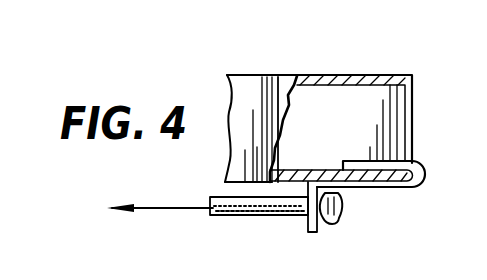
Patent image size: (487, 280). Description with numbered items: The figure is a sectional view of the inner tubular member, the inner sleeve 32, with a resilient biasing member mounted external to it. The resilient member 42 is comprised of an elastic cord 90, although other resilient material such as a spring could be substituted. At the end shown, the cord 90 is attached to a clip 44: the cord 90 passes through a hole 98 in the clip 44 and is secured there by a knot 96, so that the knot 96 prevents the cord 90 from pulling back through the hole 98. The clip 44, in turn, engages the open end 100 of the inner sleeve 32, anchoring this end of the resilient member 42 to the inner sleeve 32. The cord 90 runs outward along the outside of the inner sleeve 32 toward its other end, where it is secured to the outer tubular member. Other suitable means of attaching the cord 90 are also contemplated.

The inner sleeve 32 is at (262, 75).
The open end 100 is at (412, 108).
The clip 44 is at (427, 176).
The hole 98 is at (300, 217).
The knot 96 is at (337, 224).
The resilient member 42 is at (238, 217).
The elastic cord 90 is at (243, 197).